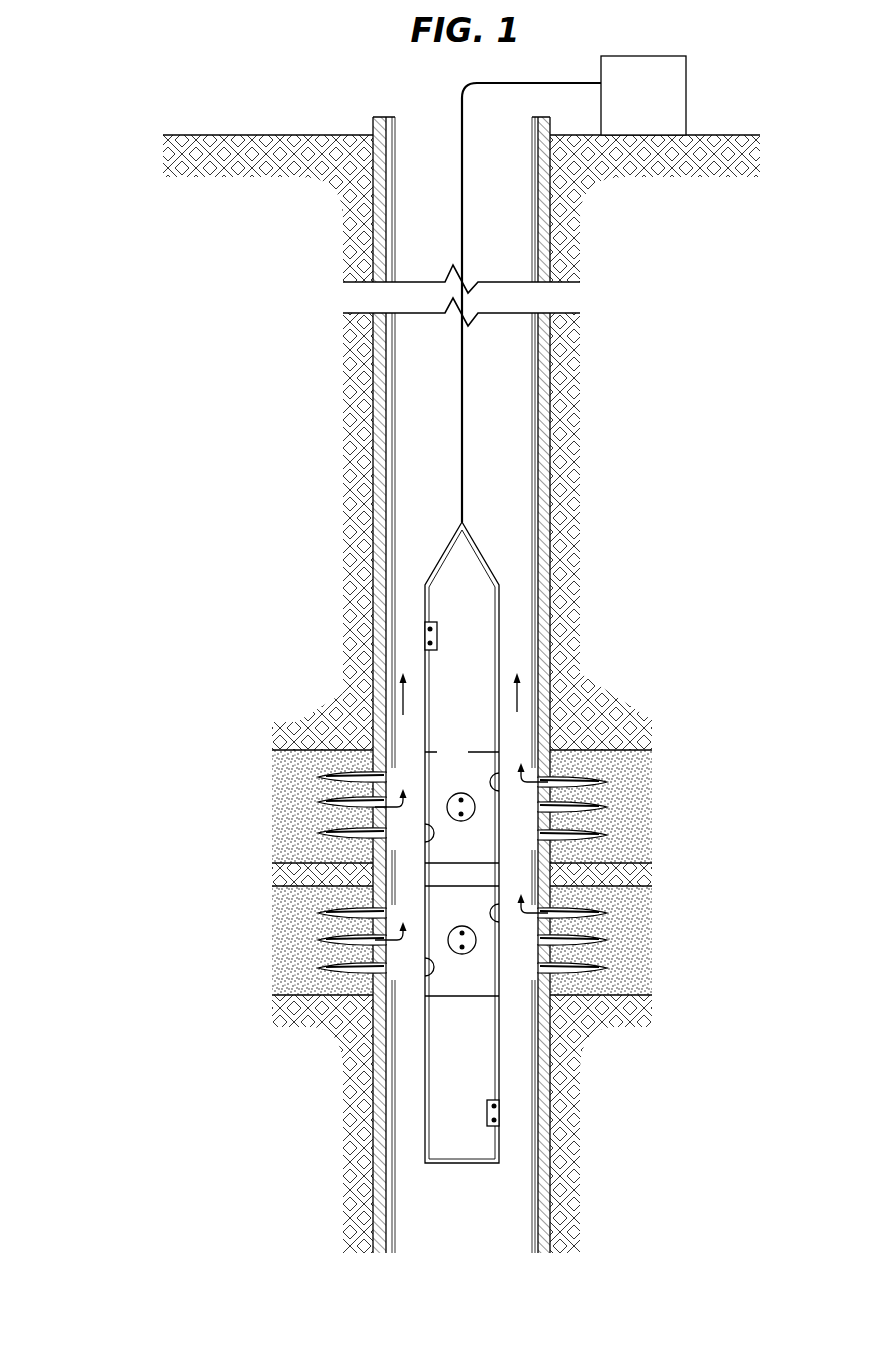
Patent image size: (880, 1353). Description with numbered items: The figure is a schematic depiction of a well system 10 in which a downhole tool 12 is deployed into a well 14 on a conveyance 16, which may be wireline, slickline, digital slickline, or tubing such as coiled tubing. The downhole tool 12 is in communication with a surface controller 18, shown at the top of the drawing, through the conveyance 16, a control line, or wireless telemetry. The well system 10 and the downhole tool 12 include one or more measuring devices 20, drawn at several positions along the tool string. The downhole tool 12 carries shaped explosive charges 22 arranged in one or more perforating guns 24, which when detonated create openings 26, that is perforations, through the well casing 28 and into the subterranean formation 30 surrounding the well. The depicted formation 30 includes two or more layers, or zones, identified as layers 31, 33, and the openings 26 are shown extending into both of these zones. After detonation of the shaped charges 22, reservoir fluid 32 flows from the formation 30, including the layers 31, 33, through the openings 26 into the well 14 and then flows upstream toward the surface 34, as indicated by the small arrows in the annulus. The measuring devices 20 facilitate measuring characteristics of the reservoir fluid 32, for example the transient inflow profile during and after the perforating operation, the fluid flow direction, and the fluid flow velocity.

The well system 10 is at (360, 88).
The downhole tool 12 is at (528, 833).
The well 14 is at (405, 496).
The conveyance 16 is at (462, 407).
The surface controller 18 is at (631, 110).
The measuring devices 20 is at (437, 636).
The shaped explosive charges 22 is at (432, 968).
The perforating guns 24 is at (480, 620).
The openings 26 is at (320, 800).
The well casing 28 is at (373, 607).
The subterranean formation 30 is at (572, 730).
The layer 31 is at (615, 821).
The reservoir fluid 32 is at (403, 695).
The layer 33 is at (615, 953).
The surface 34 is at (247, 134).